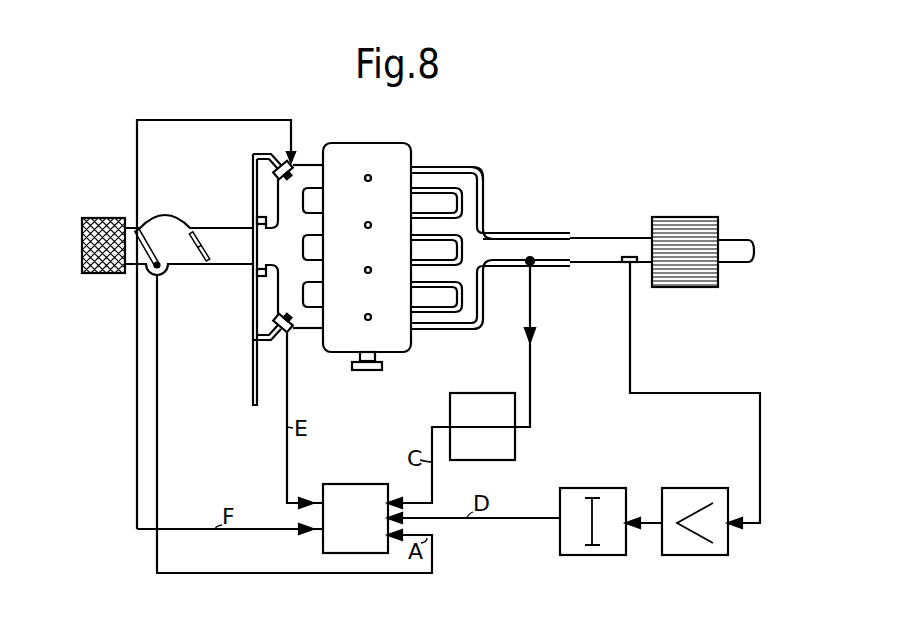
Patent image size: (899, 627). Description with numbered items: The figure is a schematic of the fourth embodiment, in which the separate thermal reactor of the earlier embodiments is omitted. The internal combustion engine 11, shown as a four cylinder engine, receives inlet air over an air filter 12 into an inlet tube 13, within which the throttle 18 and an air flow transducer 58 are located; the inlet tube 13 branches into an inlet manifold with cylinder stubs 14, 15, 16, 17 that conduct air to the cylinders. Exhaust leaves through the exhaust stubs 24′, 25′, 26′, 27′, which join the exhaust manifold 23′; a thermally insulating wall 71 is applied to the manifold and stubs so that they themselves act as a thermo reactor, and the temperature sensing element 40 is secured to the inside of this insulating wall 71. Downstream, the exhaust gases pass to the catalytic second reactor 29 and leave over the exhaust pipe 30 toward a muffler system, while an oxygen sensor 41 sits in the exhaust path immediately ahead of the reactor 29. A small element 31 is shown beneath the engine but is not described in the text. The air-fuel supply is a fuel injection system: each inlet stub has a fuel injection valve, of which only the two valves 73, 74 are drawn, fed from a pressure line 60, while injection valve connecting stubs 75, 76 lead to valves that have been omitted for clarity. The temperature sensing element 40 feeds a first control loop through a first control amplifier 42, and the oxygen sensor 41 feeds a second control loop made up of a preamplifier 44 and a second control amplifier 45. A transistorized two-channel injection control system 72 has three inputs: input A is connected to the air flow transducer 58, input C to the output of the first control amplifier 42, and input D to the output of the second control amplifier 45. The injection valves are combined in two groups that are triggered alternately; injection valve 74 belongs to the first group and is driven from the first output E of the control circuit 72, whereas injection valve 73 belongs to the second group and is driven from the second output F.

The internal combustion engine 11 is at (393, 150).
The air filter 12 is at (97, 218).
The inlet tube 13 is at (200, 237).
The cylinder stub 14 is at (314, 172).
The cylinder stub 15 is at (311, 220).
The cylinder stub 16 is at (310, 272).
The cylinder stub 17 is at (308, 330).
The throttle 18 is at (212, 262).
The exhaust manifold 23′ is at (525, 243).
The exhaust stub 24′ is at (430, 178).
The exhaust stub 25′ is at (453, 222).
The exhaust stub 26′ is at (448, 270).
The exhaust stub 27′ is at (430, 318).
The second reactor 29 is at (673, 227).
The exhaust pipe 30 is at (731, 240).
The engine speed sensor 31 is at (378, 358).
The temperature sensing element 40 is at (534, 264).
The oxygen sensor 41 is at (622, 264).
The first control amplifier 42 is at (475, 397).
The preamplifier 44 is at (687, 495).
The second control amplifier 45 is at (577, 488).
The air flow transducer 58 is at (170, 250).
The pressure line 60 is at (252, 383).
The thermally insulating wall 71 is at (481, 178).
The two-channel injection control system 72 is at (345, 490).
The fuel injection valve 73 is at (293, 163).
The fuel injection valve 74 is at (283, 332).
The injection valve connecting stub 75 is at (255, 221).
The injection valve connecting stub 76 is at (262, 278).